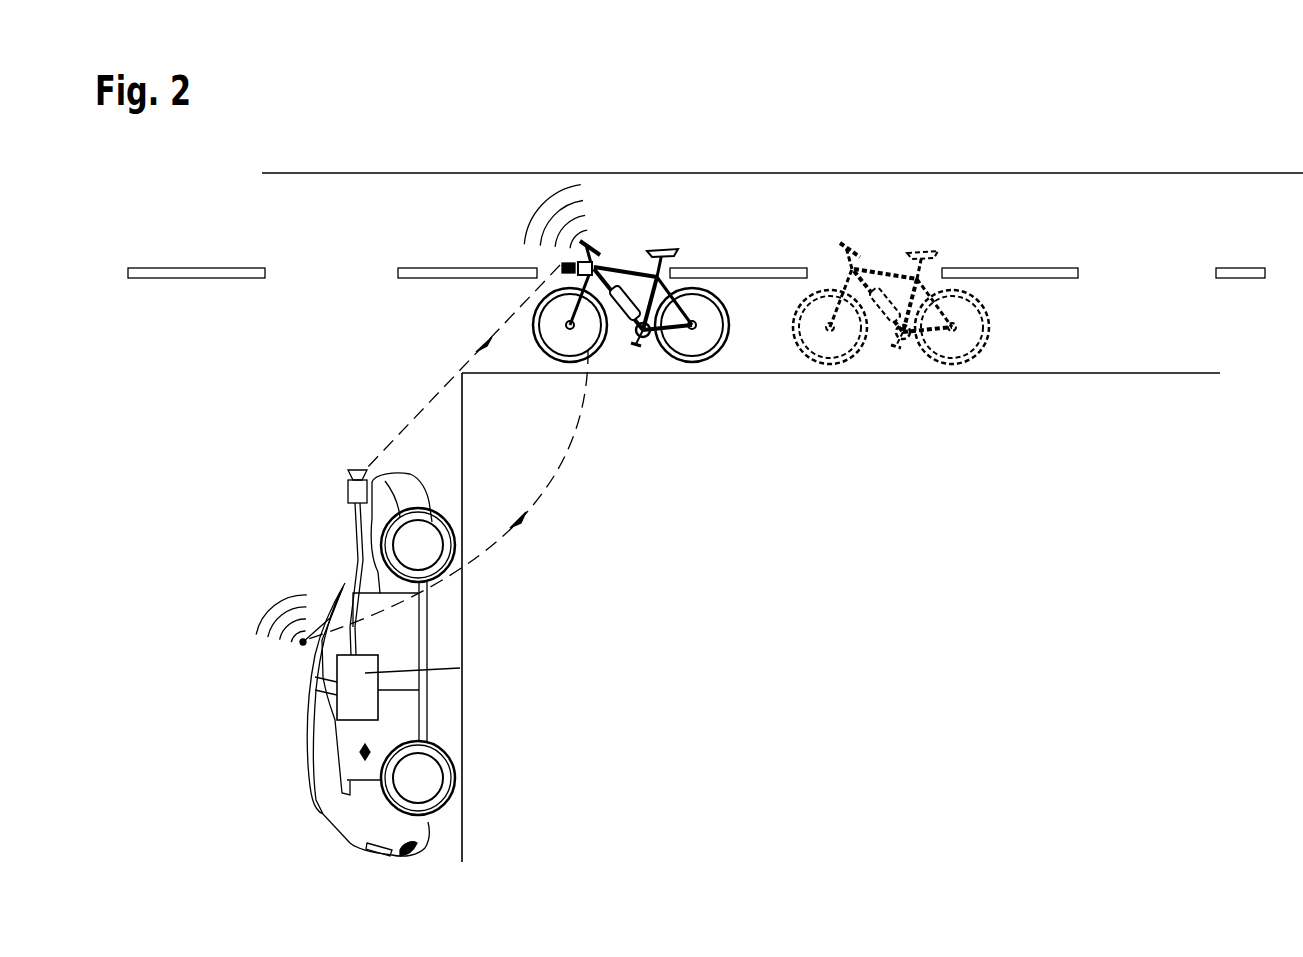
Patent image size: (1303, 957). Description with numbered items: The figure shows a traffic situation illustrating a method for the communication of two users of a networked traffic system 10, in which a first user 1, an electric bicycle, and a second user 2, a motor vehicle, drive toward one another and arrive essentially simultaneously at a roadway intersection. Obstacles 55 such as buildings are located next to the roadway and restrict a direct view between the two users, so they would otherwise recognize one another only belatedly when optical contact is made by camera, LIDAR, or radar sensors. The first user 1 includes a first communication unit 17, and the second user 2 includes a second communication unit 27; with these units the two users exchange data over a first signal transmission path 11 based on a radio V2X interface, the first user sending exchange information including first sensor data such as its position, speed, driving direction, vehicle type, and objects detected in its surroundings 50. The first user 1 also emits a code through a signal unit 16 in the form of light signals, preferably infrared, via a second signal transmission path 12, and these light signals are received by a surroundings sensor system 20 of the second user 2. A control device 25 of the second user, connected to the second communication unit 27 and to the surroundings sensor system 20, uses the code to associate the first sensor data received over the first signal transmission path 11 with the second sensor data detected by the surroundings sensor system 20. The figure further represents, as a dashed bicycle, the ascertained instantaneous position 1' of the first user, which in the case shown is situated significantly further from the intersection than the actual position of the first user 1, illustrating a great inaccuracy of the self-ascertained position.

The networked traffic system 10 is at (1143, 109).
The surroundings 50 is at (375, 232).
The obstacles 55 is at (462, 435).
The first user 1 is at (631, 243).
The instantaneous position 1' is at (891, 244).
The signal unit 16 is at (575, 262).
The first communication unit 17 is at (584, 231).
The second signal transmission path 12 is at (436, 393).
The first signal transmission path 11 is at (582, 394).
The second user 2 is at (291, 754).
The surroundings sensor system 20 is at (348, 490).
The second communication unit 27 is at (303, 644).
The control device 25 is at (337, 716).